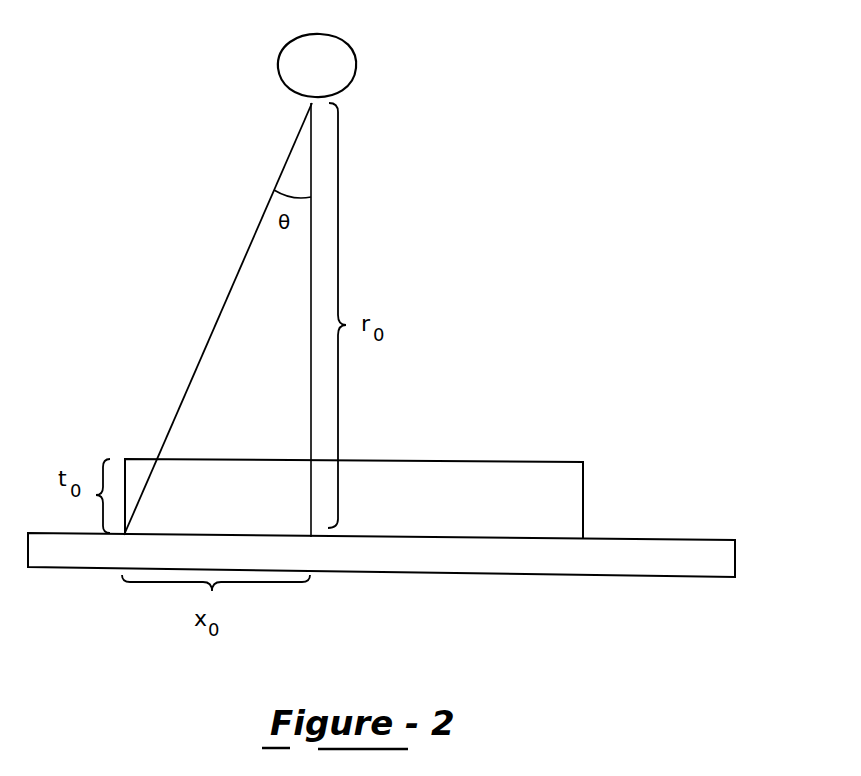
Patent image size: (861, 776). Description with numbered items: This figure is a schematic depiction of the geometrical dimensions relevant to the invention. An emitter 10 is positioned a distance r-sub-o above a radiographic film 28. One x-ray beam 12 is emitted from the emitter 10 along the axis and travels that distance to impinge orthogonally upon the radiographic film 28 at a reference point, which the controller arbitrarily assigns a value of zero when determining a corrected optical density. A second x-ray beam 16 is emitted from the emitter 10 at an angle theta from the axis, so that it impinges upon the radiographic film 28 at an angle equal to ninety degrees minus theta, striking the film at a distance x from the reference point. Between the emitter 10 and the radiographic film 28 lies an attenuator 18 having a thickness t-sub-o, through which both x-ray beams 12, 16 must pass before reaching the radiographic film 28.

The emitter 10 is at (357, 62).
The x-ray beam 12 is at (311, 360).
The x-ray beam 16 is at (190, 380).
The attenuator 18 is at (583, 478).
The radiographic film 28 is at (735, 540).